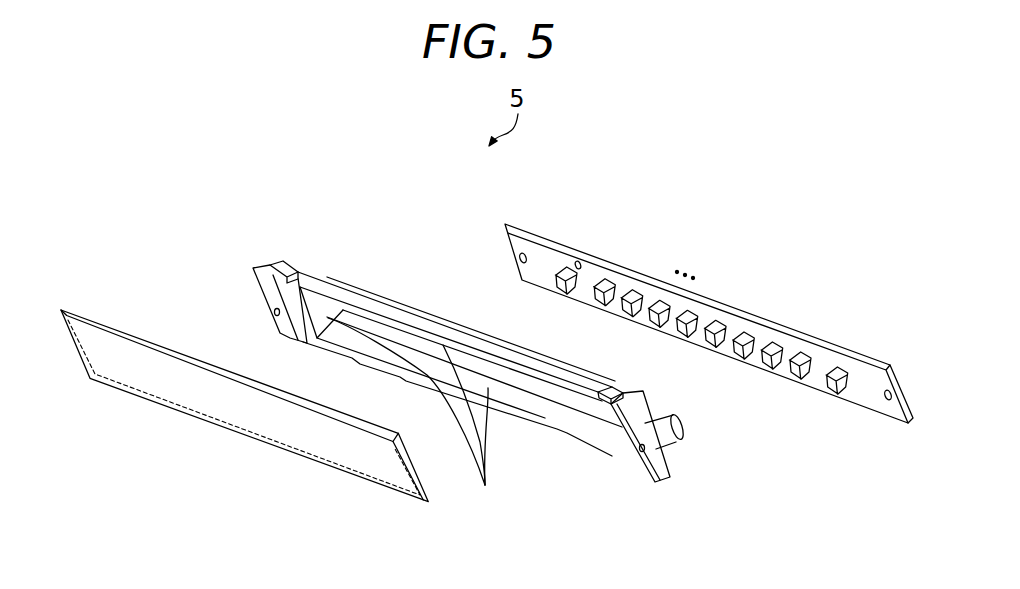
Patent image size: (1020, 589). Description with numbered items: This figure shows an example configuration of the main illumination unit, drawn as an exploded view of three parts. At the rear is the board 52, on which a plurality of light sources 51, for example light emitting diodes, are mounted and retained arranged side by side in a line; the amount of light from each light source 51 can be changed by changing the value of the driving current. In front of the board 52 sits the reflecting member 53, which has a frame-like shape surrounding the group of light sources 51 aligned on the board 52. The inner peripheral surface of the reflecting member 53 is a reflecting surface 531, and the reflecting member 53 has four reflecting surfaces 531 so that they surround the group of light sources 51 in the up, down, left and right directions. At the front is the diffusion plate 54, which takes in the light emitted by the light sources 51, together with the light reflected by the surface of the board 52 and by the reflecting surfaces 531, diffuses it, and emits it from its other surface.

The light source 51 is at (603, 283).
The board 52 is at (807, 333).
The reflecting member 53 is at (505, 485).
The reflecting surface 531 is at (418, 420).
The diffusion plate 54 is at (210, 405).